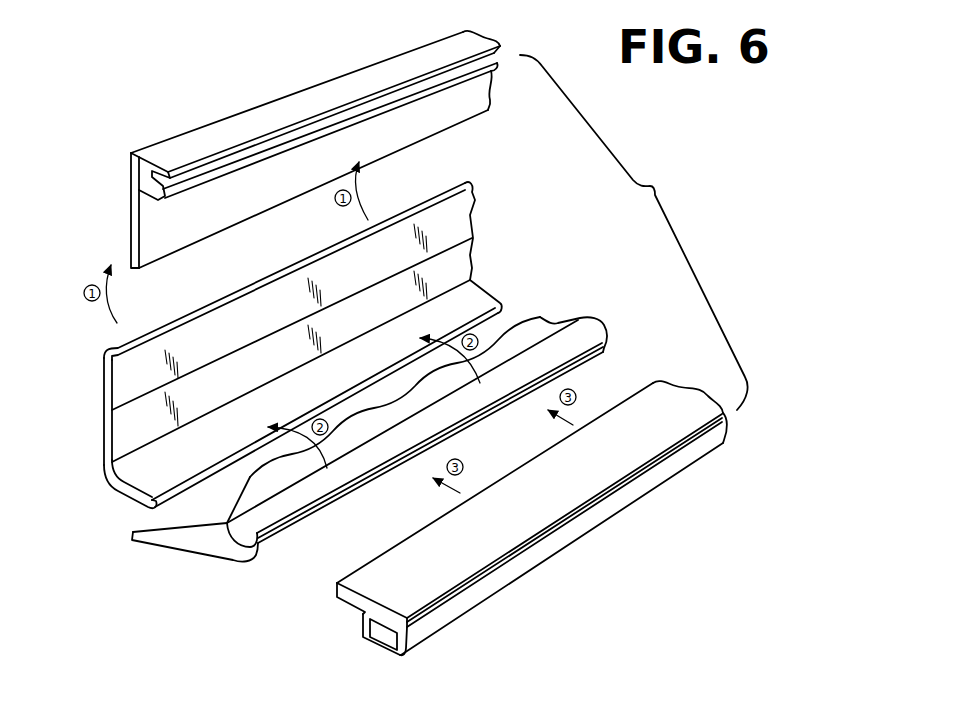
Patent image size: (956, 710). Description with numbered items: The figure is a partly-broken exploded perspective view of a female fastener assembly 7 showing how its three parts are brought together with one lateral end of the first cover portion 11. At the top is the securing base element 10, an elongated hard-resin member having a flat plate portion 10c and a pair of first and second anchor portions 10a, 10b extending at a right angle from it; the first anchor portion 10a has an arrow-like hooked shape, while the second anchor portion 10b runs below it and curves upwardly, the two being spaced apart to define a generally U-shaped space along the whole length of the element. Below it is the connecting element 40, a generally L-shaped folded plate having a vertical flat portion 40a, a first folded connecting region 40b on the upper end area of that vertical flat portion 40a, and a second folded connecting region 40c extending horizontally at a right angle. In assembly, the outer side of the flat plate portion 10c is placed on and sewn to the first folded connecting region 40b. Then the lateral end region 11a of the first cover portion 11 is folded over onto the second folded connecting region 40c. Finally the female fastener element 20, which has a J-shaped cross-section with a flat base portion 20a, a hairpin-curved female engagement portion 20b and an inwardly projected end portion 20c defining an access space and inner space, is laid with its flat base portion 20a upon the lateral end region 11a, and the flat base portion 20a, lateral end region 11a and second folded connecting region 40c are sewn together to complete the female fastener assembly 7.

The female fastener assembly 7 is at (634, 232).
The securing base element 10 is at (265, 149).
The first anchor portion 10a is at (157, 177).
The second anchor portion 10b is at (222, 168).
The flat plate portion 10c is at (157, 231).
The connecting element 40 is at (262, 359).
The vertical flat portion 40a is at (128, 427).
The first folded connecting region 40b is at (228, 323).
The second folded connecting region 40c is at (148, 471).
The first cover portion 11 is at (363, 469).
The lateral end region 11a is at (290, 510).
The female fastener element 20 is at (501, 545).
The flat base portion 20a is at (433, 547).
The female engagement portion 20b is at (378, 650).
The inwardly projected end portion 20c is at (368, 622).